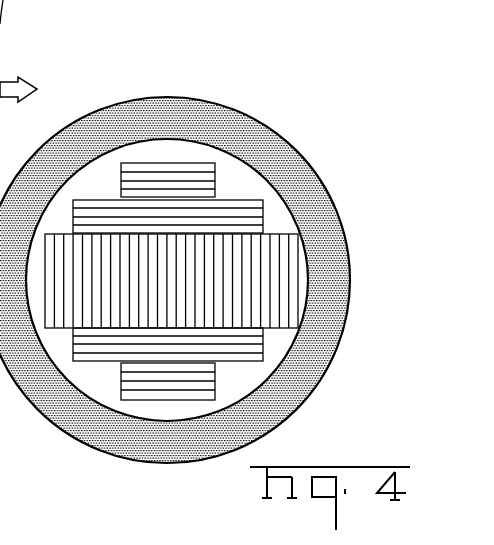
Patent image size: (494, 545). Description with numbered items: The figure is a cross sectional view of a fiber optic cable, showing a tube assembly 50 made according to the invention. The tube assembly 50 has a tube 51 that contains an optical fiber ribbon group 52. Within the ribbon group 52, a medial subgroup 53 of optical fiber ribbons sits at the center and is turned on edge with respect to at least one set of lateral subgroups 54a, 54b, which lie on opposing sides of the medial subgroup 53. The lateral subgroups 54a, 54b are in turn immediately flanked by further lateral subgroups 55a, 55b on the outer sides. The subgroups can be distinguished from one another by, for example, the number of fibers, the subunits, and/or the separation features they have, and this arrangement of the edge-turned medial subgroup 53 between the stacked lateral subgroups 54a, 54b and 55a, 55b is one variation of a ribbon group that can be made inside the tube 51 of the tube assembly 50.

The tube assembly 50 is at (222, 105).
The tube 51 is at (320, 185).
The optical fiber ribbon group 52 is at (194, 160).
The medial subgroup 53 is at (300, 268).
The lateral subgroup 54a is at (263, 217).
The lateral subgroup 54b is at (215, 368).
The lateral subgroup 55a is at (215, 184).
The lateral subgroup 55b is at (215, 392).